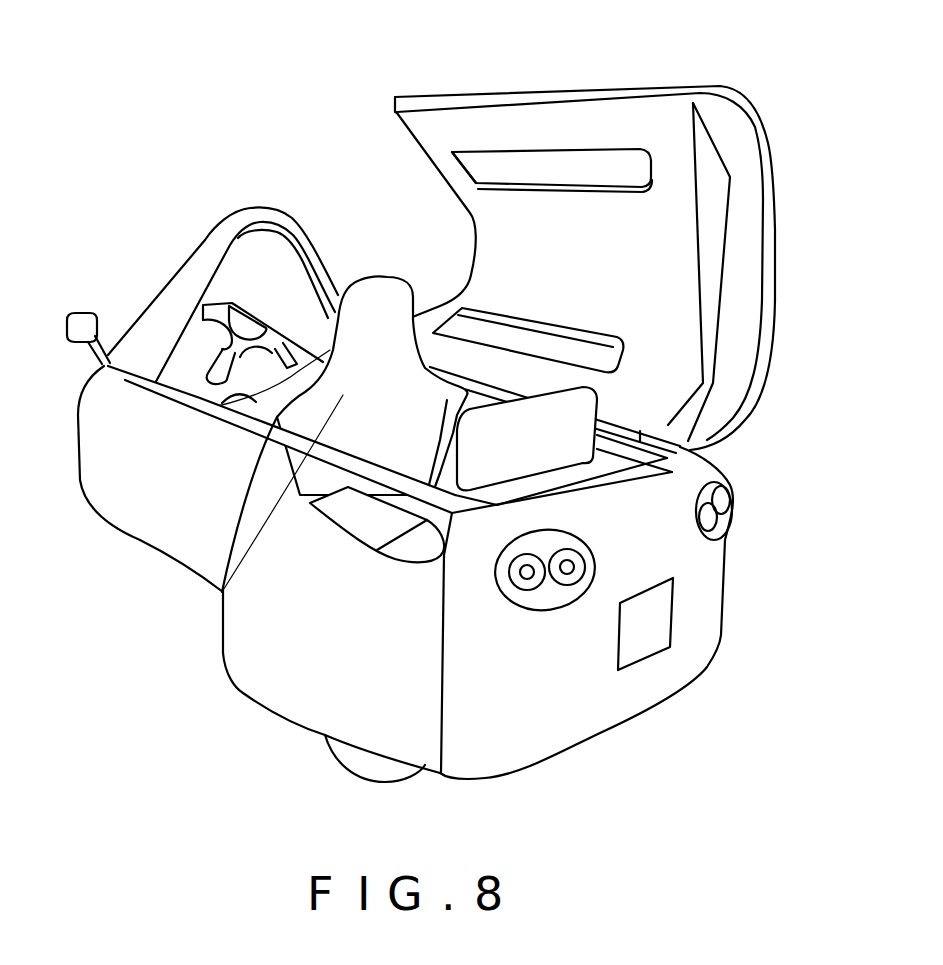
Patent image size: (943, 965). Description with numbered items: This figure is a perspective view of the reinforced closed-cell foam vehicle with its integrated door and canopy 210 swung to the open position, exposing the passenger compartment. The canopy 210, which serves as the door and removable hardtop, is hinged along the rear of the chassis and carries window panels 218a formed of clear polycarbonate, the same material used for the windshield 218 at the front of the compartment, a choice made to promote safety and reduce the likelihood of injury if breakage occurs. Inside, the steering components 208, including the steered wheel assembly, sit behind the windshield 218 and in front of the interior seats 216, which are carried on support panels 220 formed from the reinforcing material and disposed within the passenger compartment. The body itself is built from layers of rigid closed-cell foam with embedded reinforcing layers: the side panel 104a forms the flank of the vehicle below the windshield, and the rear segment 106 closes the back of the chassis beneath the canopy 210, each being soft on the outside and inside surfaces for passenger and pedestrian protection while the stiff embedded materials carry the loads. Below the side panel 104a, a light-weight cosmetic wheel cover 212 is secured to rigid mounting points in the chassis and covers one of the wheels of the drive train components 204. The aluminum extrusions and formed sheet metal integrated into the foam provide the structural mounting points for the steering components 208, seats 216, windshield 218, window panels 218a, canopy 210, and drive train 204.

The canopy 210 is at (613, 241).
The window panel 218a is at (558, 160).
The windshield 218 is at (163, 295).
The steering components 208 is at (243, 320).
The interior seats 216 is at (240, 406).
The side panel 104a is at (196, 494).
The support panel 220 is at (197, 573).
The wheel cover 212 is at (330, 673).
The drive train components 204 is at (377, 777).
The rear segment 106 is at (694, 584).